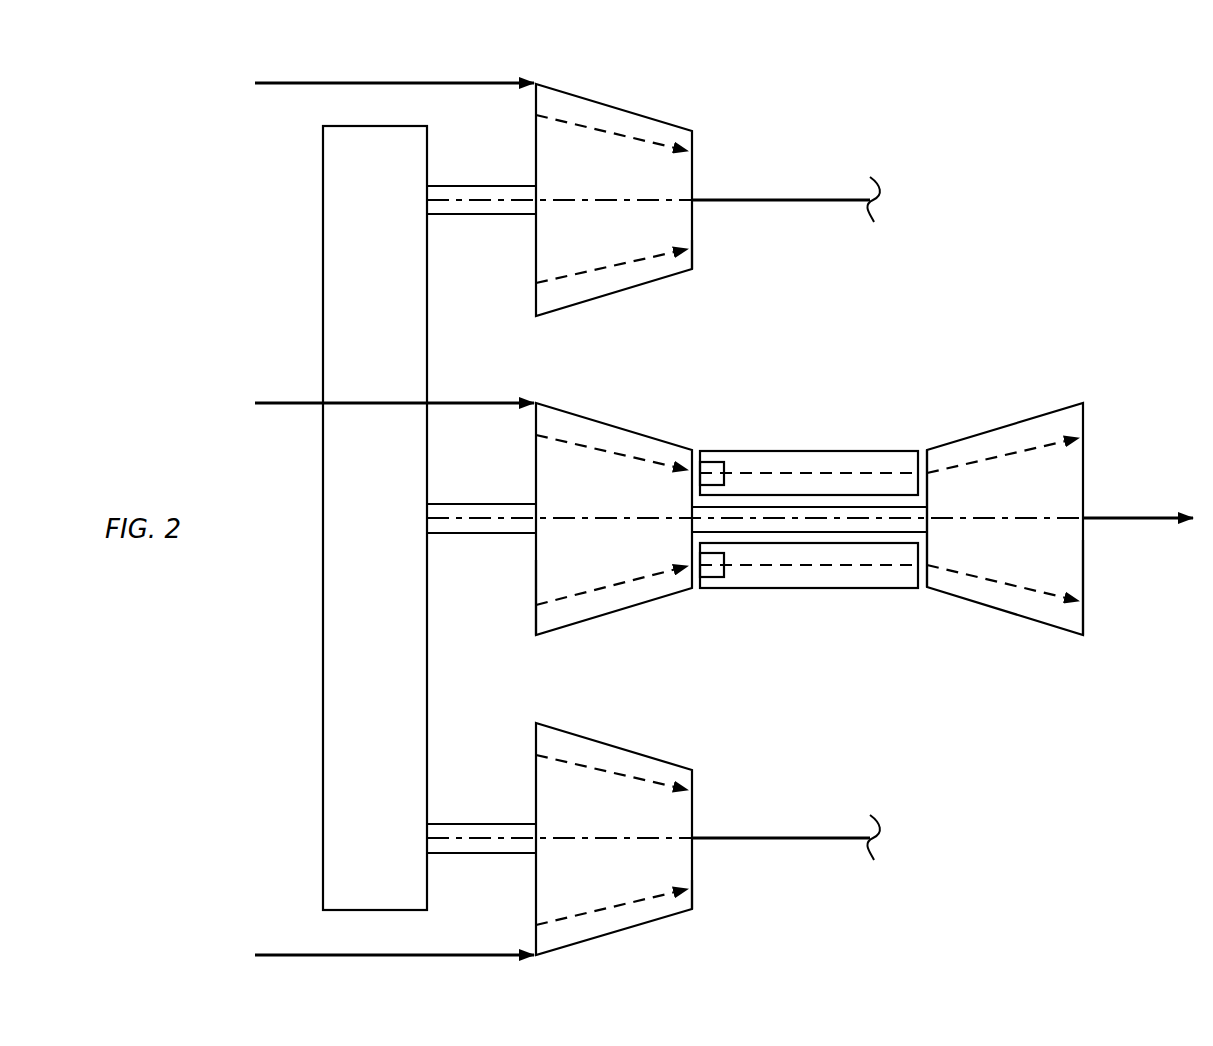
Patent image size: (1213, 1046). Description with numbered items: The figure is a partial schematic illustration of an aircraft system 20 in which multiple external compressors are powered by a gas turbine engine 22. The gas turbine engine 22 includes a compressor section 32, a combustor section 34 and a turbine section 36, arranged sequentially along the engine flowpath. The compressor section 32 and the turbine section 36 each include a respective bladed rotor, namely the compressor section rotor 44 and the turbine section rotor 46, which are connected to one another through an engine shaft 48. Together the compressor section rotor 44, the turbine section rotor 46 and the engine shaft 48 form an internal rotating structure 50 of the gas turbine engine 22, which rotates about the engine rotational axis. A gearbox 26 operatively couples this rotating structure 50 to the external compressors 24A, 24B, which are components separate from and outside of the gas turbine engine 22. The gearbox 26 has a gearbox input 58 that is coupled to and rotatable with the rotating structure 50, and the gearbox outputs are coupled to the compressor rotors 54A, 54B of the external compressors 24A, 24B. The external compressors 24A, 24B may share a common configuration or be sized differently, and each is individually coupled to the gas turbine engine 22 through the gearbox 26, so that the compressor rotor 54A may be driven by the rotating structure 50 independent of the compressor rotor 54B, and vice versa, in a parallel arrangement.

The aircraft system 20 is at (1026, 156).
The gas turbine engine 22 is at (1021, 394).
The external compressor 24A is at (674, 108).
The external compressor 24B is at (674, 750).
The gearbox 26 is at (310, 192).
The compressor section 32 is at (612, 412).
The combustor section 34 is at (808, 420).
The turbine section 36 is at (950, 427).
The compressor section rotor 44 is at (535, 567).
The turbine section rotor 46 is at (1085, 573).
The engine shaft 48 is at (912, 506).
The rotating structure 50 is at (1098, 428).
The compressor rotor 54A is at (693, 258).
The compressor rotor 54B is at (693, 893).
The gearbox input 58 is at (490, 503).